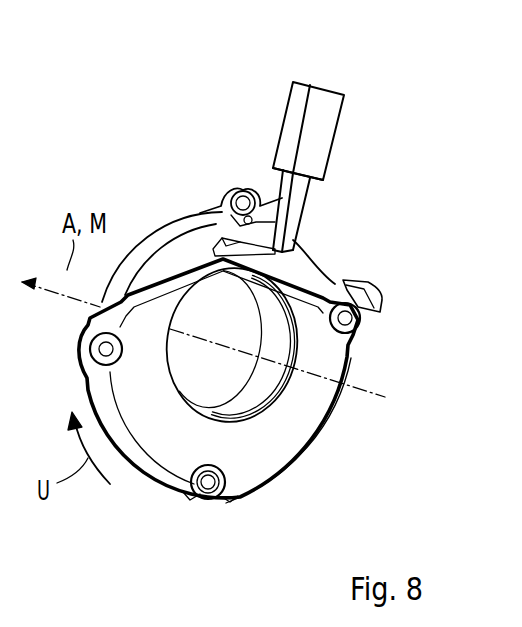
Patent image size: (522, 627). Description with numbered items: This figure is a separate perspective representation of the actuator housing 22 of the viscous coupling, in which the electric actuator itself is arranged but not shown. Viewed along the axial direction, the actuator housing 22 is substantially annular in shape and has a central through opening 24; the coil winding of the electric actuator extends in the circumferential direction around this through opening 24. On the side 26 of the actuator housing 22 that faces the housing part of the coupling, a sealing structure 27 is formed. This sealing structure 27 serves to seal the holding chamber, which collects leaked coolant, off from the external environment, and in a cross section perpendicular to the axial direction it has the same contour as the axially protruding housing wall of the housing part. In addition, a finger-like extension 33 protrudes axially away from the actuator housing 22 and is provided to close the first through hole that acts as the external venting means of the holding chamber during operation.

The actuator housing 22 is at (192, 178).
The through opening 24 is at (217, 382).
The side of the actuator housing 26 is at (267, 452).
The sealing structure 27 is at (268, 483).
The finger-like extension 33 is at (358, 280).